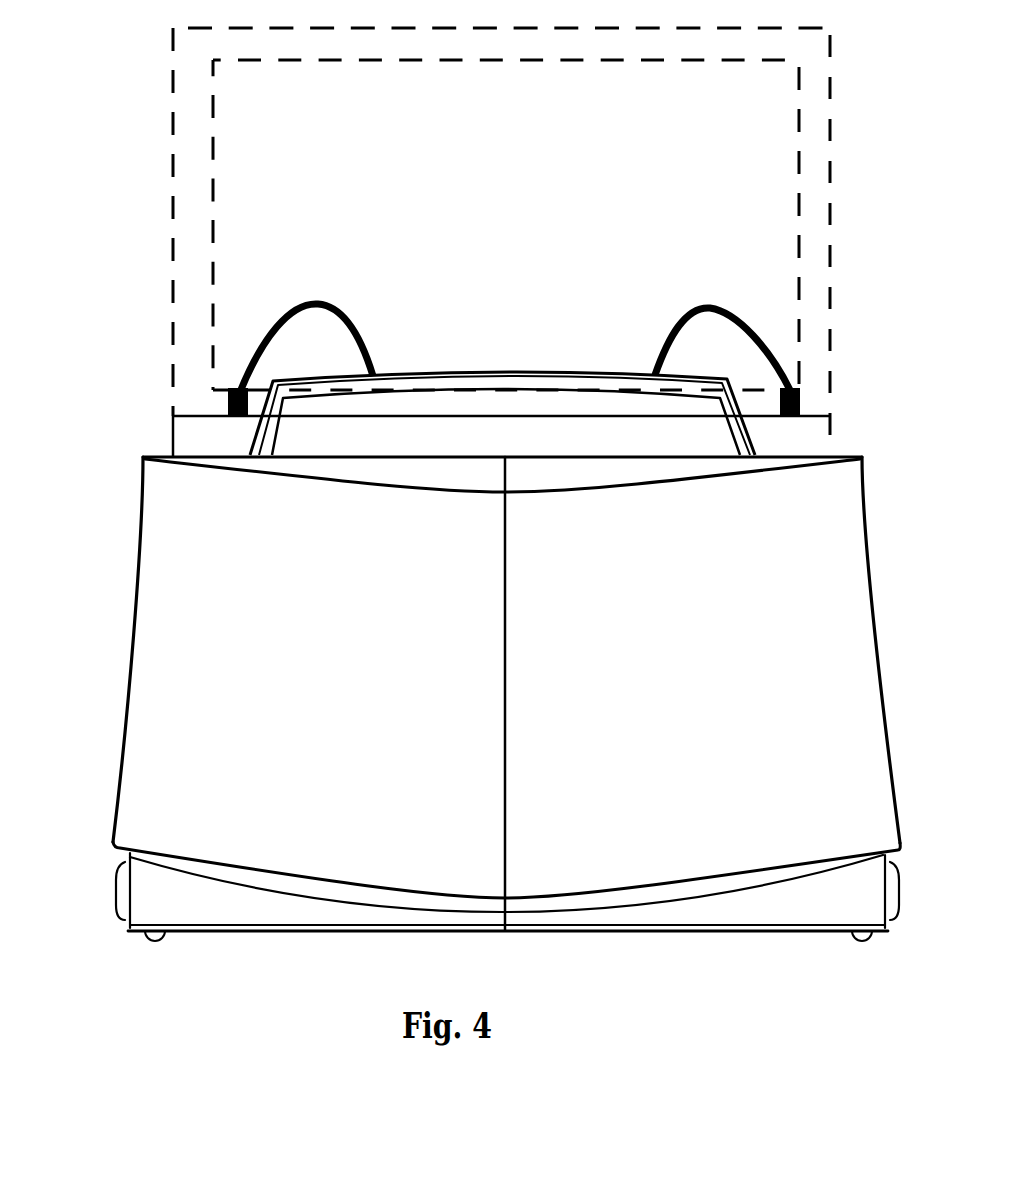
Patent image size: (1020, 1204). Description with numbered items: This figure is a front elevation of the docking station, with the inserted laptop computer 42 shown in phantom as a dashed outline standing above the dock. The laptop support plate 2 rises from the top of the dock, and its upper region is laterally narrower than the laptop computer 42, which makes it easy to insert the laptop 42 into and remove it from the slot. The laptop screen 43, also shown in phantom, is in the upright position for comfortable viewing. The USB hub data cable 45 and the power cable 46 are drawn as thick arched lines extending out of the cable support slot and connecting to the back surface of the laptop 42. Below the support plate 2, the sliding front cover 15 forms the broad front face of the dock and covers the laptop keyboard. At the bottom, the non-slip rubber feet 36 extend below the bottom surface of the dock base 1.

The dock base 1 is at (843, 900).
The laptop support plate 2 is at (757, 433).
The sliding front cover 15 is at (230, 572).
The non-slip rubber feet 36 is at (145, 935).
The laptop computer 42 is at (173, 440).
The laptop screen 43 is at (187, 133).
The USB hub data cable 45 is at (305, 305).
The power cable 46 is at (710, 305).